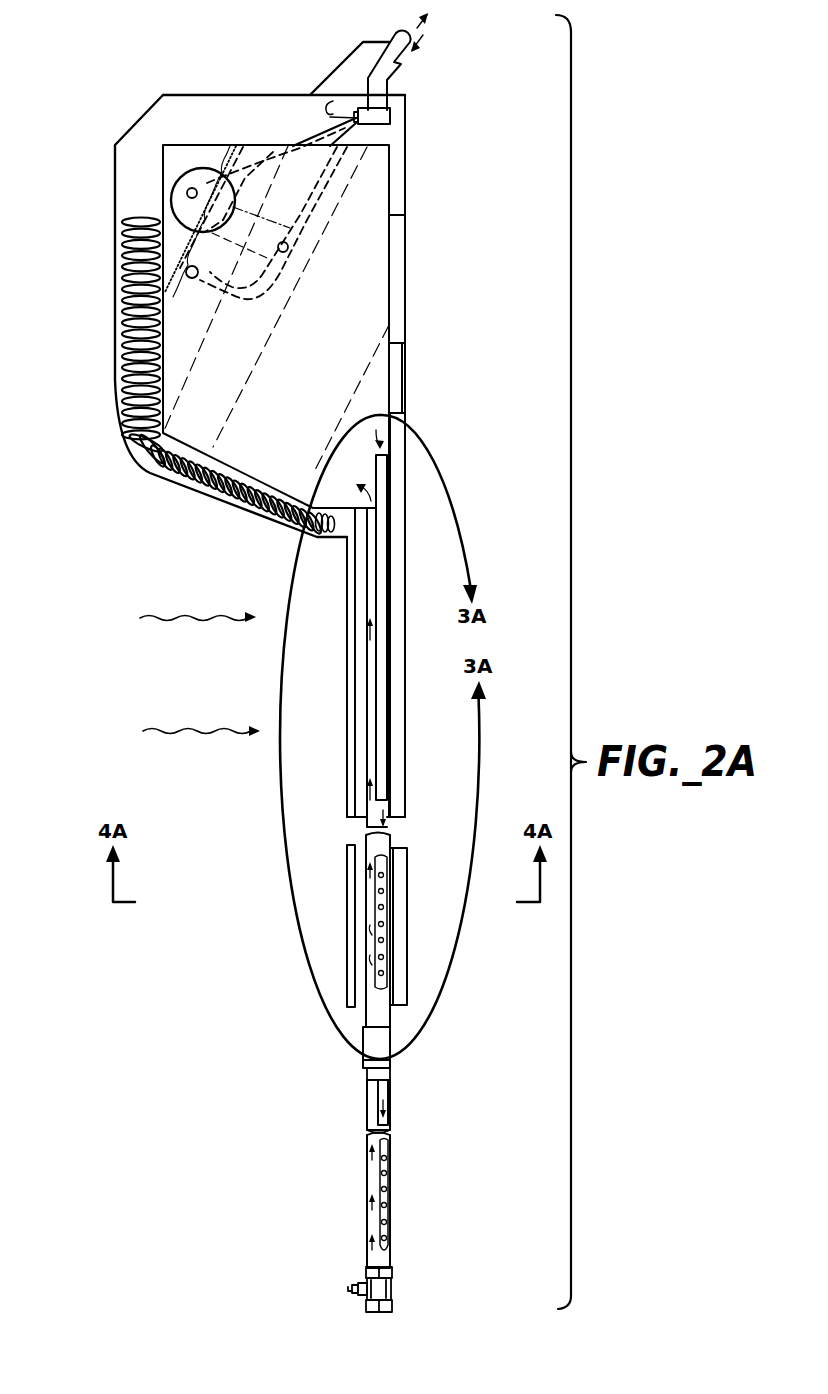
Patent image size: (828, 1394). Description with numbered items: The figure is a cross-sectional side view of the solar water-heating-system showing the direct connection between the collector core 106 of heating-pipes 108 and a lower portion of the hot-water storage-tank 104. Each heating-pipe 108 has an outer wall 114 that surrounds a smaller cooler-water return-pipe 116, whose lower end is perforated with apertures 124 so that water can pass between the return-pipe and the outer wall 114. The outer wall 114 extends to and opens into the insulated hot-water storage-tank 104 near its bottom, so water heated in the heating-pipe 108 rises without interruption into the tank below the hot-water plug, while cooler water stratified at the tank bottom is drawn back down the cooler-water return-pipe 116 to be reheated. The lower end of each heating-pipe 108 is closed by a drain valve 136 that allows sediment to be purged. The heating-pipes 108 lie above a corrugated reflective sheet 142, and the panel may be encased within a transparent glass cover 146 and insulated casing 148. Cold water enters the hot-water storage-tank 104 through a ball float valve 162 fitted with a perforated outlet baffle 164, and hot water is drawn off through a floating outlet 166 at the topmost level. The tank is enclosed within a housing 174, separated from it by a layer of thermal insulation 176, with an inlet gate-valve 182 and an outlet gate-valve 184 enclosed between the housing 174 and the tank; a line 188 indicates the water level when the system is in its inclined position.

The hot-water storage-tank 104 is at (377, 253).
The collector core 106 is at (388, 743).
The heating-pipe 108 is at (357, 638).
The outer wall 114 is at (368, 1112).
The cooler-water return-pipe 116 is at (382, 657).
The apertures 124 is at (378, 892).
The drain valve 136 is at (392, 1288).
The reflective sheet 142 is at (400, 748).
The transparent glass cover 146 is at (347, 727).
The insulated casing 148 is at (407, 673).
The ball float valve 162 is at (180, 176).
The perforated outlet baffle 164 is at (277, 140).
The floating outlet 166 is at (190, 279).
The housing 174 is at (115, 337).
The thermal insulation 176 is at (140, 220).
The inlet gate-valve 182 is at (390, 116).
The outlet gate-valve 184 is at (324, 132).
The line 188 is at (222, 174).